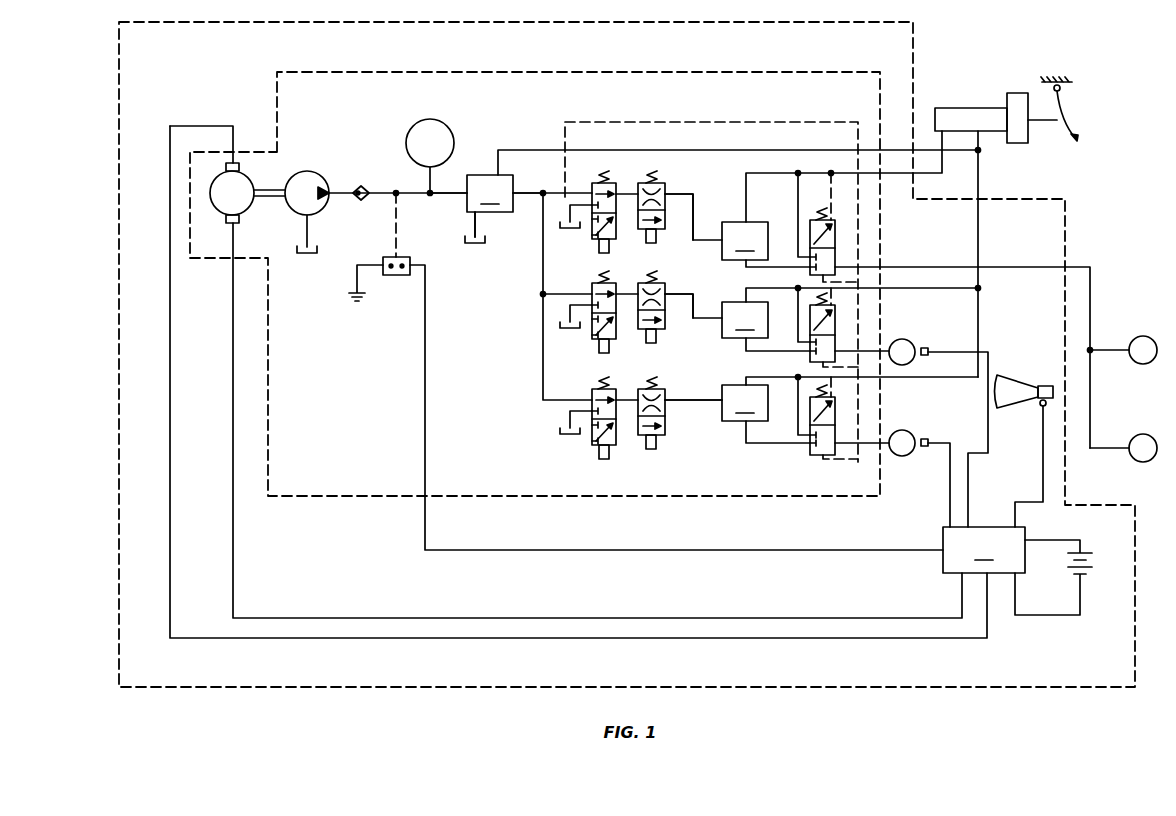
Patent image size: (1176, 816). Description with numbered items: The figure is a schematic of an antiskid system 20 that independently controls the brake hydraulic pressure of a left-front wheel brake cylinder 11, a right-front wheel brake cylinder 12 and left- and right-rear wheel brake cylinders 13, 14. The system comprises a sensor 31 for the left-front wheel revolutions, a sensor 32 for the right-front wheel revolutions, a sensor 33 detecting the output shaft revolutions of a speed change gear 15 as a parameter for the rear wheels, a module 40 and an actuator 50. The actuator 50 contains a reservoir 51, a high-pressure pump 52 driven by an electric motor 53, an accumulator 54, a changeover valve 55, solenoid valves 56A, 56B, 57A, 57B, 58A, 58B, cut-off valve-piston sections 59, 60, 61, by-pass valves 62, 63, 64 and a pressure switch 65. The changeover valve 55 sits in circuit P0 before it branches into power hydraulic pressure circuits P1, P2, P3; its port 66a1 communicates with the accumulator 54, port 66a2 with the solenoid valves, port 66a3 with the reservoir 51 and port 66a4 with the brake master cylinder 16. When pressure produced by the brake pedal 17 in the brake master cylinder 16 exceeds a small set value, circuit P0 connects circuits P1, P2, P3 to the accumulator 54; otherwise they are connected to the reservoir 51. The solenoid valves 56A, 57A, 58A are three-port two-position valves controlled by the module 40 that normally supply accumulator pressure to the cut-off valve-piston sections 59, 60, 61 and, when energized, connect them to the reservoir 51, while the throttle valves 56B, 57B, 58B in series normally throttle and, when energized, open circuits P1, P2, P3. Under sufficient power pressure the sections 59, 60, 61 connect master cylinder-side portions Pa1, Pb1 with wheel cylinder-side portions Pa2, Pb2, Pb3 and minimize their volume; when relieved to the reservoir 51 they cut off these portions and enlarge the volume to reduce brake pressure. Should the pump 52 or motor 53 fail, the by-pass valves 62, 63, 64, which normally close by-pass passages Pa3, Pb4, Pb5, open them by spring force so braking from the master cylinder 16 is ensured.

The antiskid system 20 is at (918, 30).
The actuator 50 is at (800, 64).
The brake master cylinder 16 is at (967, 108).
The brake pedal 17 is at (1082, 140).
The accumulator 54 is at (420, 125).
The high-pressure pump 52 is at (313, 178).
The electric motor 53 is at (242, 190).
The reservoir 51 is at (305, 262).
The changeover valve 55 is at (490, 206).
The pressure switch 65 is at (396, 277).
The port 66a1 is at (467, 200).
The port 66a2 is at (514, 191).
The port 66a3 is at (487, 215).
The port 66a4 is at (497, 153).
The circuit P0 is at (531, 205).
The solenoid valve 56A is at (617, 185).
The solenoid valve 56B is at (666, 185).
The solenoid valve 57A is at (617, 285).
The solenoid valve 57B is at (666, 285).
The solenoid valve 58A is at (604, 390).
The solenoid valve 58B is at (651, 390).
The power hydraulic pressure circuit P1 is at (693, 209).
The power hydraulic pressure circuit P2 is at (693, 310).
The power hydraulic pressure circuit P3 is at (708, 400).
The cut-off valve-piston section 59 is at (745, 241).
The cut-off valve-piston section 60 is at (745, 320).
The cut-off valve-piston section 61 is at (745, 403).
The brake master cylinder-side hydraulic pressure circuit portion Pa1 is at (746, 181).
The wheel brake cylinder-side hydraulic pressure circuit portion Pa2 is at (1035, 269).
The by-pass passage Pa3 is at (798, 211).
The brake master cylinder-side hydraulic pressure circuit portion Pb1 is at (979, 244).
The wheel brake cylinder-side hydraulic pressure circuit portion Pb2 is at (746, 352).
The wheel brake cylinder-side hydraulic pressure circuit portion Pb3 is at (746, 433).
The by-pass passage Pb4 is at (798, 303).
The by-pass passage Pb5 is at (798, 391).
The by-pass valve 62 is at (836, 229).
The by-pass valve 63 is at (836, 311).
The by-pass valve 64 is at (836, 399).
The right-front wheel brake cylinder 12 is at (906, 341).
The left-front wheel brake cylinder 11 is at (902, 457).
The sensor 32 is at (928, 348).
The sensor 31 is at (928, 439).
The right-rear wheel brake cylinder 14 is at (1143, 336).
The left-rear wheel brake cylinder 13 is at (1143, 434).
The speed change gear 15 is at (1020, 381).
The sensor 33 is at (1041, 407).
The module 40 is at (1017, 571).